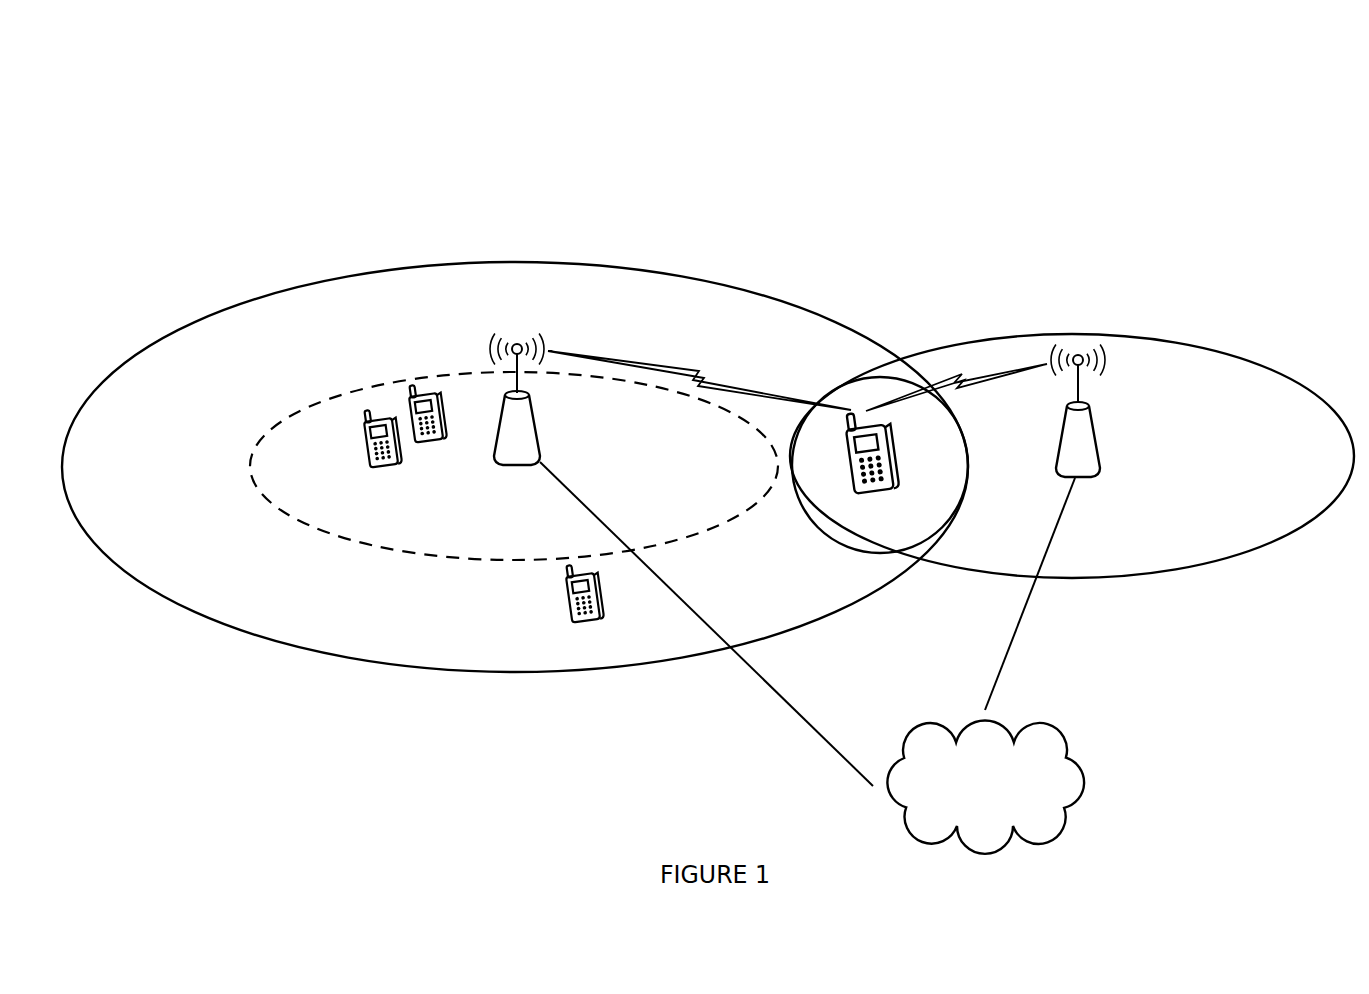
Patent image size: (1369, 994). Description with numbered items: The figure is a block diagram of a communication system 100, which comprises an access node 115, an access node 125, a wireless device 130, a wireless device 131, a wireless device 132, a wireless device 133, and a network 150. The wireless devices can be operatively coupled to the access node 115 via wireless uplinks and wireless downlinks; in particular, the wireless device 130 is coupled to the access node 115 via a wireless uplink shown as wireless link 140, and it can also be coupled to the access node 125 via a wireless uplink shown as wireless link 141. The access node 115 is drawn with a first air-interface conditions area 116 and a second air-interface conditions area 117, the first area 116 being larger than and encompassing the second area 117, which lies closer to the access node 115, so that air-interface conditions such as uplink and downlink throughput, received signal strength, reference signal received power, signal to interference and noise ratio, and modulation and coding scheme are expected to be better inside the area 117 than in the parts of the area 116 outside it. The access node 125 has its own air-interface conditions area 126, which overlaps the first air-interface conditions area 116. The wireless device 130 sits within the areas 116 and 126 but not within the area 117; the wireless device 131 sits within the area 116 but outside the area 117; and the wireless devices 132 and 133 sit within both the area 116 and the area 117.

The communication system 100 is at (157, 88).
The access node 115 is at (497, 463).
The first air-interface conditions area 116 is at (199, 618).
The second air-interface conditions area 117 is at (251, 472).
The access node 125 is at (1099, 476).
The air-interface conditions area 126 is at (1182, 567).
The wireless device 130 is at (852, 420).
The wireless device 131 is at (598, 601).
The wireless device 132 is at (366, 420).
The wireless device 133 is at (412, 402).
The wireless link 140 is at (697, 372).
The wireless link 141 is at (960, 377).
The network 150 is at (965, 822).